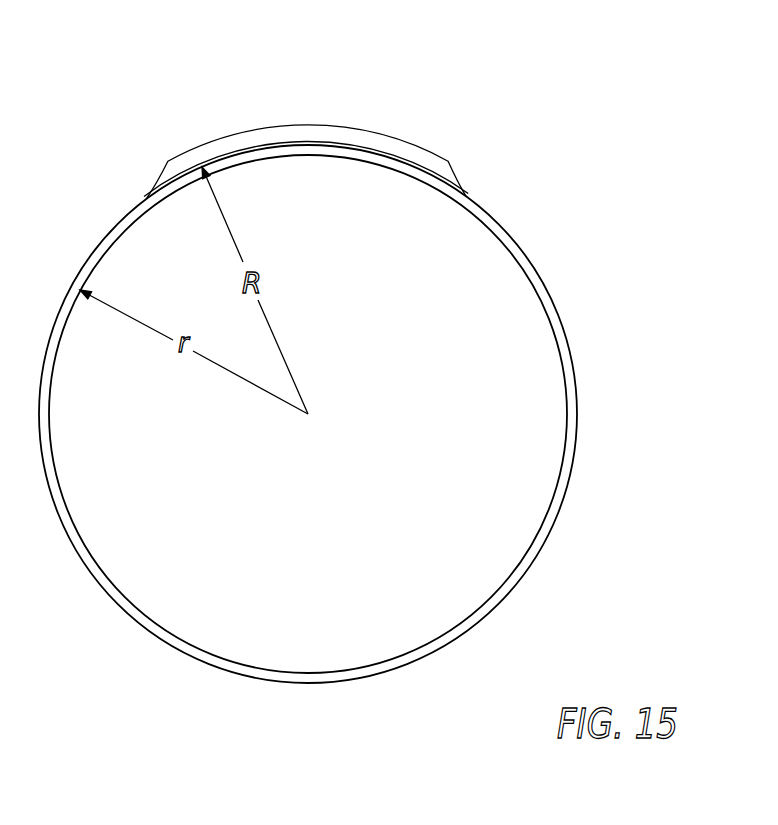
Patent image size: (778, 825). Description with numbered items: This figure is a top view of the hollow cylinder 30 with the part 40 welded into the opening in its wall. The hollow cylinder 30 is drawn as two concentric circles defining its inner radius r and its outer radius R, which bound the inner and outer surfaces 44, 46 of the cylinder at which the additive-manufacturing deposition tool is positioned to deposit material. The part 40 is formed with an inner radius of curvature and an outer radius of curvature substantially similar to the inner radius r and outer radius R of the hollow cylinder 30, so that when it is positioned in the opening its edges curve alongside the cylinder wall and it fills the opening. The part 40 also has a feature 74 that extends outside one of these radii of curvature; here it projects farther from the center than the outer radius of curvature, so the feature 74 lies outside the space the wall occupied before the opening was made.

The hollow cylinder 30 is at (508, 236).
The part 40 is at (420, 148).
The surface 44 is at (558, 348).
The surface 46 is at (563, 322).
The feature 74 is at (353, 128).